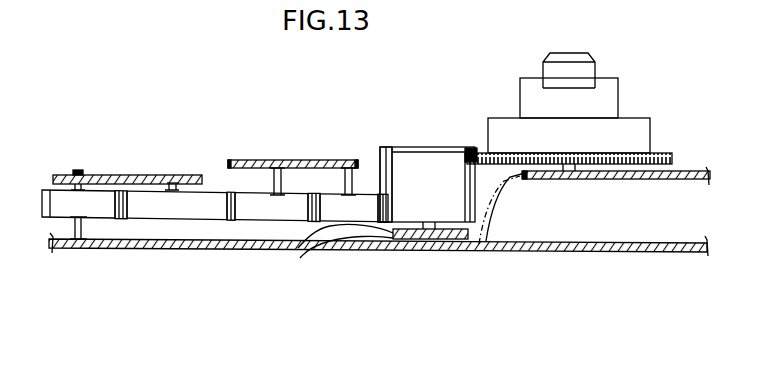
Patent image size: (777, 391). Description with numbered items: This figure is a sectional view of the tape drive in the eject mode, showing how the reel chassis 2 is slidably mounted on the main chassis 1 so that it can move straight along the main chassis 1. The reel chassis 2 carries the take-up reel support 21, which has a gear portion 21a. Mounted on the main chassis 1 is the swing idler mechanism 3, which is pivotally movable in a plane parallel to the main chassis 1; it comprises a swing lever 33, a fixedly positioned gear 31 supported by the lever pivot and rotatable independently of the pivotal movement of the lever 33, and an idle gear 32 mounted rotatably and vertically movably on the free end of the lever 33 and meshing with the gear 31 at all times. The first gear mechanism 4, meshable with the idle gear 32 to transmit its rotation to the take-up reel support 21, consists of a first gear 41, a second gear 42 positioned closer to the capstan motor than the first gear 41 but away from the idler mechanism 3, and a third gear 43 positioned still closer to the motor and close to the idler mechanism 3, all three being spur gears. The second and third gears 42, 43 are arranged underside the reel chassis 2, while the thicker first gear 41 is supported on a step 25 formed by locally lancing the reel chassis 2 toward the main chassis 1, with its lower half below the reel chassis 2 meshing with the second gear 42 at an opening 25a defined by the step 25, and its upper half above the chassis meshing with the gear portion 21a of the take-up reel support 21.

The main chassis 1 is at (665, 242).
The reel chassis 2 is at (301, 160).
The swing idler mechanism 3 is at (200, 111).
The fixedly positioned gear 31 is at (95, 198).
The idle gear 32 is at (168, 198).
The swing lever 33 is at (140, 198).
The first gear mechanism 4 is at (338, 299).
The first gear 41 is at (403, 207).
The second gear 42 is at (328, 208).
The third gear 43 is at (252, 208).
The take-up reel support 21 is at (612, 102).
The gear portion 21a is at (655, 152).
The step 25 is at (441, 239).
The opening 25a is at (366, 249).